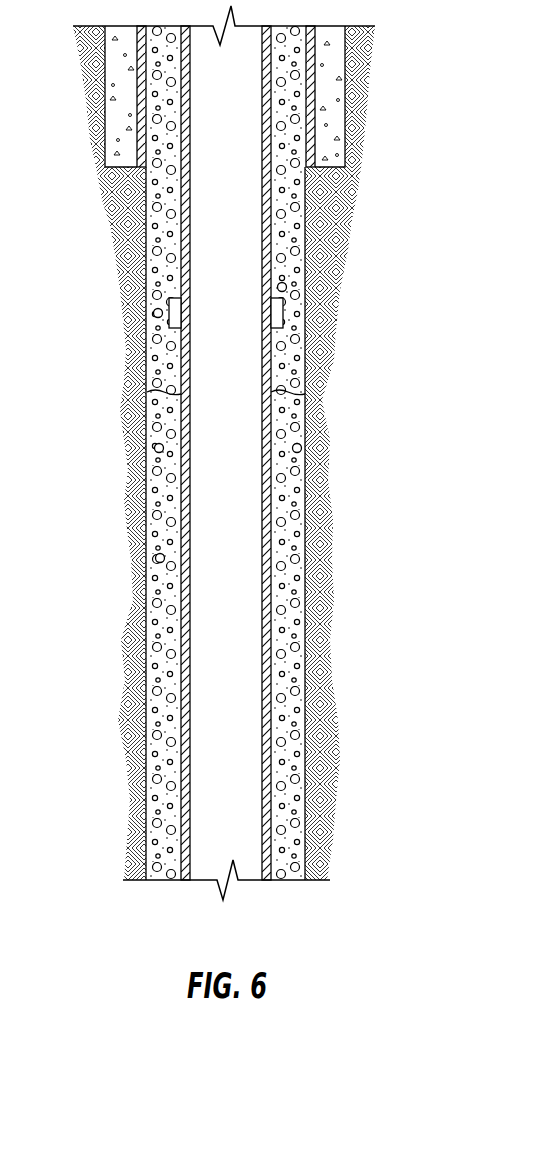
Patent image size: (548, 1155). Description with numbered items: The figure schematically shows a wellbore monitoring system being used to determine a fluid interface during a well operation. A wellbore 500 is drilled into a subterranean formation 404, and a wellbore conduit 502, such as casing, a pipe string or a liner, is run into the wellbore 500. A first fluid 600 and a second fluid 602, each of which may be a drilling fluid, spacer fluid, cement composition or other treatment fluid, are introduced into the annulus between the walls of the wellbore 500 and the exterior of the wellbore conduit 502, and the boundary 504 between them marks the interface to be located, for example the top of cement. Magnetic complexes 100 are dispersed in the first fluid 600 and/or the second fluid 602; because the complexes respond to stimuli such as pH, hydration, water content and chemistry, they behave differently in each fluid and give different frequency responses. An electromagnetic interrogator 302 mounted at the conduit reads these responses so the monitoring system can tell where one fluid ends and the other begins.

The magnetic complex 100 is at (153, 312).
The electromagnetic interrogator 302 is at (169, 313).
The subterranean formation 404 is at (128, 473).
The wellbore 500 is at (146, 253).
The wellbore conduit 502 is at (266, 212).
The gravel pack interface 504 is at (148, 392).
The first fluid 600 is at (148, 202).
The second fluid 602 is at (156, 561).